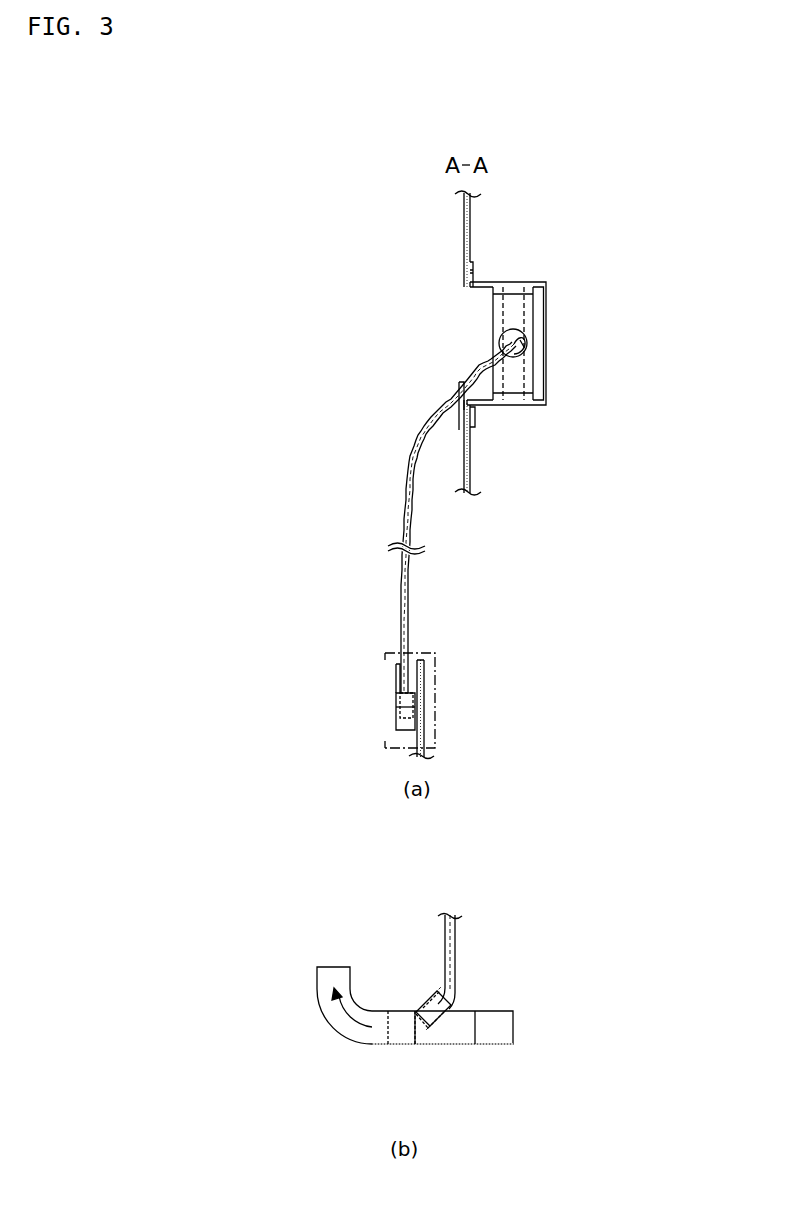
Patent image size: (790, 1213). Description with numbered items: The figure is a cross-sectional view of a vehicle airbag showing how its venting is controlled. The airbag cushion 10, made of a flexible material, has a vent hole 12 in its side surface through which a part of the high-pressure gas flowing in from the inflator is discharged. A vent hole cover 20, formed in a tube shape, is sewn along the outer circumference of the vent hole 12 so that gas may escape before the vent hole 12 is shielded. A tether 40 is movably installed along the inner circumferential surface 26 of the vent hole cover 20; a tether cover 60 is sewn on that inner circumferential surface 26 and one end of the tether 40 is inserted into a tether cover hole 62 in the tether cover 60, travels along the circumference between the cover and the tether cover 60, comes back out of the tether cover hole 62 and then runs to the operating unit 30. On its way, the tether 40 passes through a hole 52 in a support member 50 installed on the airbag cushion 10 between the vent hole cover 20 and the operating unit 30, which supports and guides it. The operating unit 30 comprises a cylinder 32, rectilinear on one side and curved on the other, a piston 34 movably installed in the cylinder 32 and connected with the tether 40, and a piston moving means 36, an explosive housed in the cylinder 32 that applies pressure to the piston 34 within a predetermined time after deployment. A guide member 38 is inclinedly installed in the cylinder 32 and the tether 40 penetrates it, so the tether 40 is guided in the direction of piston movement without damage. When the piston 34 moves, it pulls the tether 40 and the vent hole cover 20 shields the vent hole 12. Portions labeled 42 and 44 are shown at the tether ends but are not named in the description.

The airbag cushion 10 is at (428, 245).
The vent hole 12 is at (471, 316).
The vent hole cover 20 is at (564, 268).
The inner circumferential surface 26 is at (535, 311).
The operating unit 30 is at (370, 603).
The cylinder 32 is at (396, 669).
The piston 34 is at (400, 1035).
The piston moving means 36 is at (394, 724).
The guide member 38 is at (414, 710).
The tether 40 is at (392, 465).
The wire end 42 is at (394, 688).
The wire hook end 44 is at (507, 343).
The support member 50 is at (459, 386).
The hole 52 is at (459, 395).
The tether cover 60 is at (535, 370).
The tether cover hole 62 is at (526, 337).